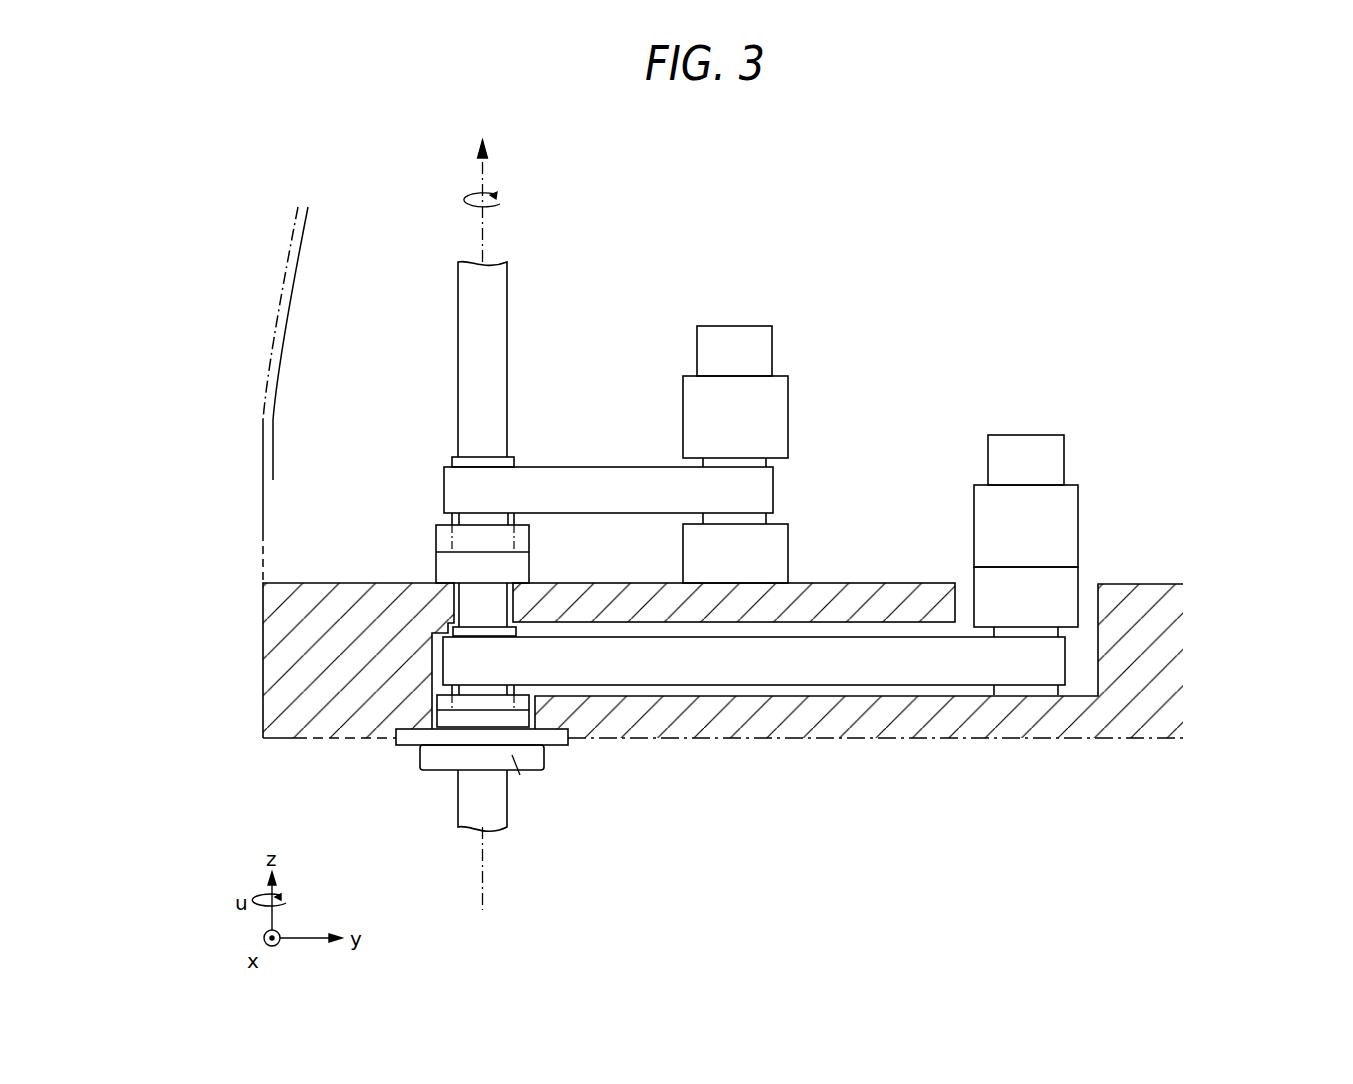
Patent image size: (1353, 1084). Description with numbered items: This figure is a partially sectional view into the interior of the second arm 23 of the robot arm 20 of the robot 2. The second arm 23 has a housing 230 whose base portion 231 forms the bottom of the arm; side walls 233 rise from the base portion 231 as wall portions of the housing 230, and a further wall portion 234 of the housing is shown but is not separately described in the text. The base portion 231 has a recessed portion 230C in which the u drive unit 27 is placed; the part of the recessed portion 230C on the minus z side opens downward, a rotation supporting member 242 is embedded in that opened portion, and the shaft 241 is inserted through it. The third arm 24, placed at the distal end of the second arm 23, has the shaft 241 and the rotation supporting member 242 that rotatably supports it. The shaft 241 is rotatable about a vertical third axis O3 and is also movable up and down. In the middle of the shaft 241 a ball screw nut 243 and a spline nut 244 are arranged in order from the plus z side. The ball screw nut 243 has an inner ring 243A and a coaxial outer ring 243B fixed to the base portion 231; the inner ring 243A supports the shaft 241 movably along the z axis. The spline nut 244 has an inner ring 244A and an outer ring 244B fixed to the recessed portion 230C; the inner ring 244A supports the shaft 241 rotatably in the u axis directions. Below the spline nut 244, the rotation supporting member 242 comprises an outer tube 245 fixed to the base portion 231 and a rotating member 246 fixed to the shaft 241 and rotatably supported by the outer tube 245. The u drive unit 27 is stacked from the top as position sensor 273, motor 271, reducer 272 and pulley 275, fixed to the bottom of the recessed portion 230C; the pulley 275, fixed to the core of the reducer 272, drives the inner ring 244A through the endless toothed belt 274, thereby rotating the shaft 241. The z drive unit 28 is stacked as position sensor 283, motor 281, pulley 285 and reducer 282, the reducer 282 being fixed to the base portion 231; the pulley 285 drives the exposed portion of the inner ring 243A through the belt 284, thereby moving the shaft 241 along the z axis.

The robot 2 is at (1225, 160).
The robot arm 20 is at (1142, 258).
The second arm 23 is at (247, 445).
The housing 230 is at (284, 283).
The base portion 231 is at (307, 606).
The side walls 233 is at (247, 515).
The curved wall portion 234 is at (263, 415).
The recessed portion 230C is at (639, 688).
The third arm 24 is at (446, 356).
The shaft 241 is at (487, 327).
The rotation supporting member 242 is at (407, 775).
The ball screw nut 243 is at (443, 452).
The inner ring 243A is at (480, 463).
The outer ring 243B is at (520, 540).
The spline nut 244 is at (430, 615).
The inner ring 244A is at (515, 630).
The outer ring 244B is at (468, 700).
The outer tube 245 is at (535, 758).
The rotating member 246 is at (520, 775).
The u drive unit 27 is at (1027, 422).
The motor 271 is at (1050, 525).
The reducer 272 is at (1050, 598).
The position sensor 273 is at (1050, 461).
The belt 274 is at (720, 662).
The pulley 275 is at (1050, 690).
The z drive unit 28 is at (734, 308).
The motor 281 is at (748, 416).
The reducer 282 is at (748, 552).
The position sensor 283 is at (740, 352).
The belt 284 is at (636, 490).
The pulley 285 is at (760, 517).
The third axis O3 is at (485, 898).